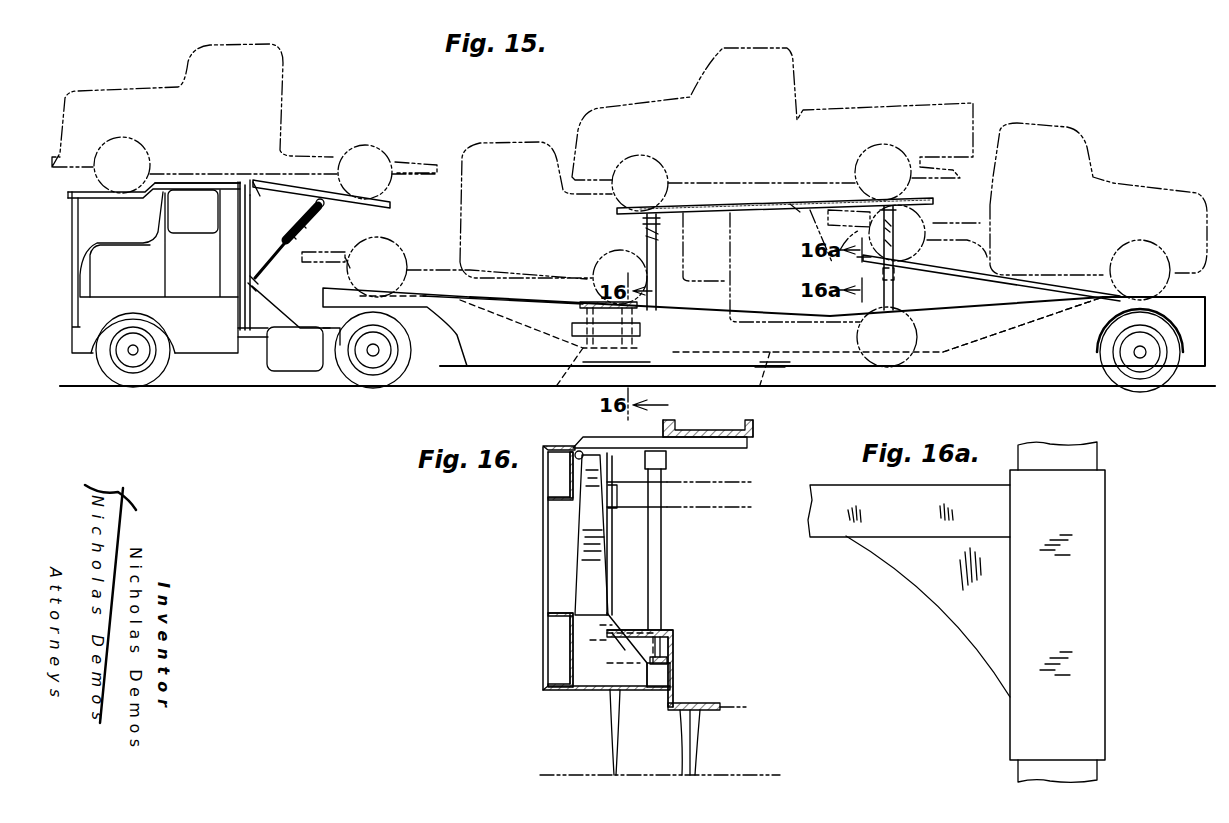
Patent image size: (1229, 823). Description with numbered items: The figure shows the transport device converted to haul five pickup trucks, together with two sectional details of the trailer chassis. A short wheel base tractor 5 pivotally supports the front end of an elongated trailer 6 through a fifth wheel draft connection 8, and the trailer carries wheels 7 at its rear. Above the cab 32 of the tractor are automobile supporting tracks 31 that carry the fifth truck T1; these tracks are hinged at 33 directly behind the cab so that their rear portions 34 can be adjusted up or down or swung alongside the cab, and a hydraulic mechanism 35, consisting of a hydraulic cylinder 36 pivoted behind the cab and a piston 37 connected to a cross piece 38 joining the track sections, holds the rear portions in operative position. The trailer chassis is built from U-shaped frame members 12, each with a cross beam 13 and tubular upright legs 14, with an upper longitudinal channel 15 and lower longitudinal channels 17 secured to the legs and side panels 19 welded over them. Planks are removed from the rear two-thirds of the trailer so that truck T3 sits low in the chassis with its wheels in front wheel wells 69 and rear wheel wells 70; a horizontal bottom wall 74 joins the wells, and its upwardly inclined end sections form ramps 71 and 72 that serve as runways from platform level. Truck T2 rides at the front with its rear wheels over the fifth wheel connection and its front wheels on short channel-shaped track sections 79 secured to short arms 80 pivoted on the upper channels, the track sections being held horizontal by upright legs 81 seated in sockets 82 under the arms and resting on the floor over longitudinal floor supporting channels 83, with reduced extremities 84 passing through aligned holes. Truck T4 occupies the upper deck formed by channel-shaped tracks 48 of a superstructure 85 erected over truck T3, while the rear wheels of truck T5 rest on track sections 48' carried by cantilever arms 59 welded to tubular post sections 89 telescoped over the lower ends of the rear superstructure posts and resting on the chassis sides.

In FIG. 15, the tractor 5 is at (192, 280).
In FIG. 15, the trailer 6 is at (1018, 362).
In FIG. 15, the wheels 7 is at (1157, 378).
In FIG. 16, the wheels 7 is at (610, 742).
In FIG. 15, the fifth wheel draft connection 8 is at (417, 312).
In FIG. 16, the U-shaped frame members 12 is at (630, 587).
In FIG. 16, the cross beam 13 is at (656, 680).
In FIG. 16, the tubular upright legs 14 is at (580, 562).
In FIG. 16, the upper longitudinal channel 15 is at (548, 513).
In FIG. 16, the longitudinal channels 17 is at (548, 657).
In FIG. 16, the side panels 19 is at (540, 603).
In FIG. 15, the automobile supporting tracks 31 is at (218, 178).
In FIG. 15, the cab 32 is at (163, 213).
In FIG. 15, the hinge 33 is at (258, 196).
In FIG. 15, the rear portions of the tracks 34 is at (360, 215).
In FIG. 15, the hydraulic mechanism 35 is at (288, 265).
In FIG. 15, the hydraulic cylinder 36 is at (284, 236).
In FIG. 15, the piston 37 is at (307, 214).
In FIG. 15, the cross piece 38 is at (328, 204).
In FIG. 15, the channel-shaped tracks 48 is at (775, 182).
In FIG. 15, the track sections 48' is at (991, 264).
In FIG. 16A, the cantilever arm 59 is at (898, 523).
In FIG. 15, the front wheel wells 69 is at (580, 360).
In FIG. 16, the front wheel wells 69 is at (715, 705).
In FIG. 15, the rear wheel wells 70 is at (945, 380).
In FIG. 15, the front inclined ramp 71 is at (468, 322).
In FIG. 15, the rear inclined ramp 72 is at (1032, 326).
In FIG. 15, the bottom wall 74 is at (765, 380).
In FIG. 16, the bottom wall 74 is at (672, 618).
In FIG. 15, the short channel-shaped track sections 79 is at (600, 292).
In FIG. 16, the short channel-shaped track sections 79 is at (748, 444).
In FIG. 16, the short arms 80 is at (710, 447).
In FIG. 15, the upright legs 81 is at (590, 316).
In FIG. 16, the upright legs 81 is at (660, 538).
In FIG. 16, the sockets 82 is at (645, 458).
In FIG. 16, the longitudinal floor supporting channels 83 is at (672, 652).
In FIG. 16, the reduced extremities 84 is at (620, 650).
In FIG. 15, the superstructure 85 is at (771, 226).
In FIG. 15, the tubular post sections 89 is at (895, 296).
In FIG. 16A, the tubular post sections 89 is at (1105, 680).
In FIG. 15, the pickup truck T1 is at (286, 62).
In FIG. 15, the pickup truck T2 is at (514, 143).
In FIG. 15, the pickup truck T3 is at (718, 270).
In FIG. 15, the pickup truck T4 is at (796, 82).
In FIG. 15, the pickup truck T5 is at (1066, 124).